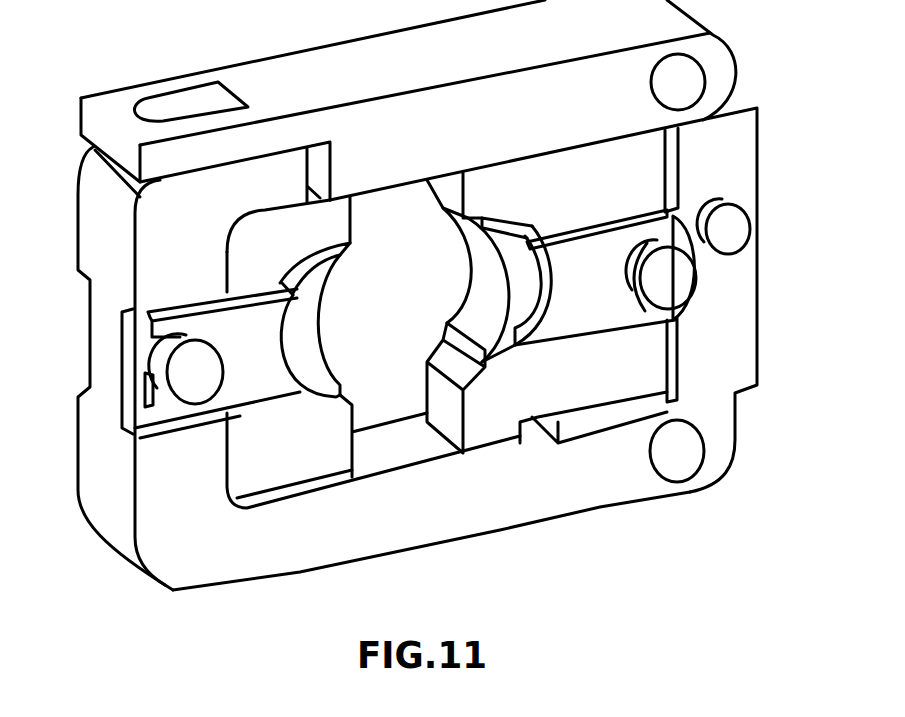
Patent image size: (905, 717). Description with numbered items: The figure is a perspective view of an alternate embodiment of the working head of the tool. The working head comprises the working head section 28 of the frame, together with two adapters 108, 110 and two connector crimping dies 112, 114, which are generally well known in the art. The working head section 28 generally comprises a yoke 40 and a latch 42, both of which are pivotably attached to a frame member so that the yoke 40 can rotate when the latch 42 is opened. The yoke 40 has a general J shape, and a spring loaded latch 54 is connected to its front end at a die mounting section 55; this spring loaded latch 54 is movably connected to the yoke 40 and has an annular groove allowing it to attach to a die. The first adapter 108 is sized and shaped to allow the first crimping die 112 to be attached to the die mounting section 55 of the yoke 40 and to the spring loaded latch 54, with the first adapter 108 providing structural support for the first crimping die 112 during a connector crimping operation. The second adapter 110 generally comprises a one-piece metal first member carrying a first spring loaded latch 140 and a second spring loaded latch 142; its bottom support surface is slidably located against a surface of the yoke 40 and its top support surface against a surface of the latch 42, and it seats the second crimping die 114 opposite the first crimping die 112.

The working head section 28 is at (247, 585).
The yoke 40 is at (175, 567).
The latch 42 is at (314, 57).
The spring loaded latch 54 is at (185, 390).
The die mounting section 55 is at (115, 333).
The first adapter 108 is at (335, 477).
The second adapter 110 is at (747, 392).
The first connector crimping die 112 is at (273, 373).
The second connector crimping die 114 is at (578, 300).
The first spring loaded latch 140 is at (735, 230).
The second spring loaded latch 142 is at (683, 283).